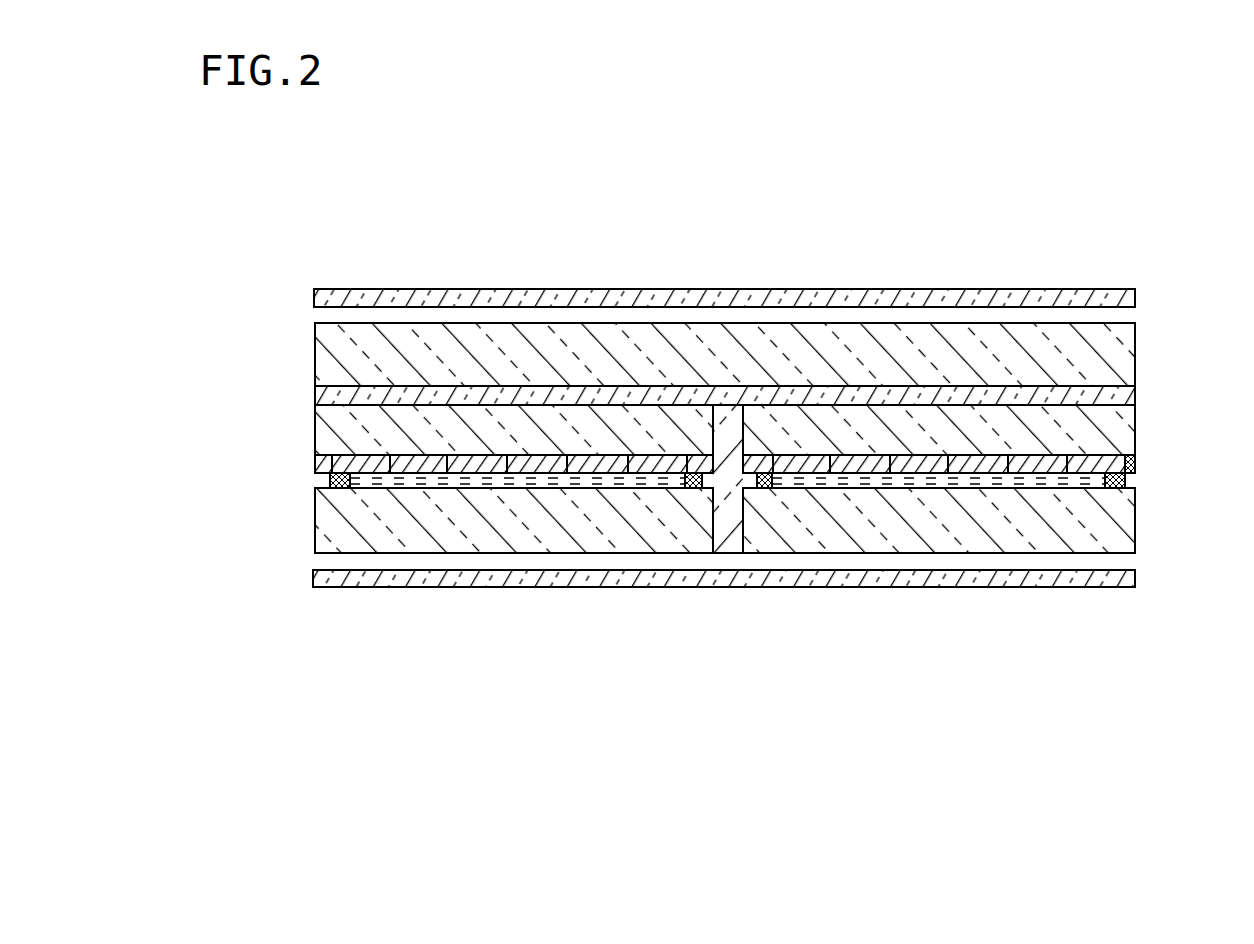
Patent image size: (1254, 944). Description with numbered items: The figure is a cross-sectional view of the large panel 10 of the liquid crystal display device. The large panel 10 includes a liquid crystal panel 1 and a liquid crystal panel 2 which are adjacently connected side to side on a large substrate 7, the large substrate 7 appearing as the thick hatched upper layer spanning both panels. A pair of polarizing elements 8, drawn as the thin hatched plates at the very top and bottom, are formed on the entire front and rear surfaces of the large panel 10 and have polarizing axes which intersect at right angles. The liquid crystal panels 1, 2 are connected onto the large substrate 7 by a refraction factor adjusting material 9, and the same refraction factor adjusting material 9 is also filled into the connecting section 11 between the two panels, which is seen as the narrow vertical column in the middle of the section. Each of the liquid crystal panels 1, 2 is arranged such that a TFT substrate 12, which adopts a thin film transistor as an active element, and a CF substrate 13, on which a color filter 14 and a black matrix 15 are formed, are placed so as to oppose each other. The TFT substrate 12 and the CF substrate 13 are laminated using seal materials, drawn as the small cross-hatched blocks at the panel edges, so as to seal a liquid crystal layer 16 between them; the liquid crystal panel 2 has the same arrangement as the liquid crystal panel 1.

The liquid crystal panel 1 is at (722, 549).
The liquid crystal panel 2 is at (1142, 517).
The large substrate 7 is at (338, 353).
The polarizing element 8 is at (804, 300).
The refraction factor adjusting material 9 is at (729, 410).
The large panel 10 is at (912, 233).
The connecting section 11 is at (738, 557).
The TFT substrate 12 is at (322, 502).
The CF substrate 13 is at (330, 427).
The color filter 14 is at (725, 552).
The black matrix 15 is at (372, 456).
The liquid crystal layer 16 is at (607, 487).